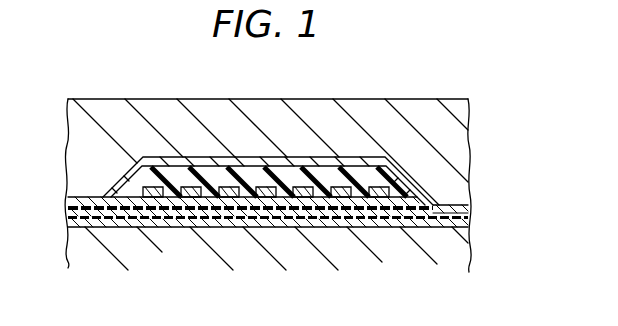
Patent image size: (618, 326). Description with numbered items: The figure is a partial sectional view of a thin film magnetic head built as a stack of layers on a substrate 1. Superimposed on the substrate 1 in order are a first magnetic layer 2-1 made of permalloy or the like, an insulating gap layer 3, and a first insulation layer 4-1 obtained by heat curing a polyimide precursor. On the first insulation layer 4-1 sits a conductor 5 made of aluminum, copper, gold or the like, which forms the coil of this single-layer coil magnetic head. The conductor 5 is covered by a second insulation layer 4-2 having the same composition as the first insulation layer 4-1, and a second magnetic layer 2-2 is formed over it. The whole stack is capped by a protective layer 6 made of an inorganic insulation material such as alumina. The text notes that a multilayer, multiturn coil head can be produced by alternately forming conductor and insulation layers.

The substrate 1 is at (67, 248).
The first magnetic layer 2-1 is at (163, 223).
The second magnetic layer 2-2 is at (297, 157).
The insulating gap layer 3 is at (255, 212).
The first insulation layer 4-1 is at (358, 206).
The second insulation layer 4-2 is at (160, 170).
The conductor 5 is at (227, 187).
The protective layer 6 is at (370, 110).